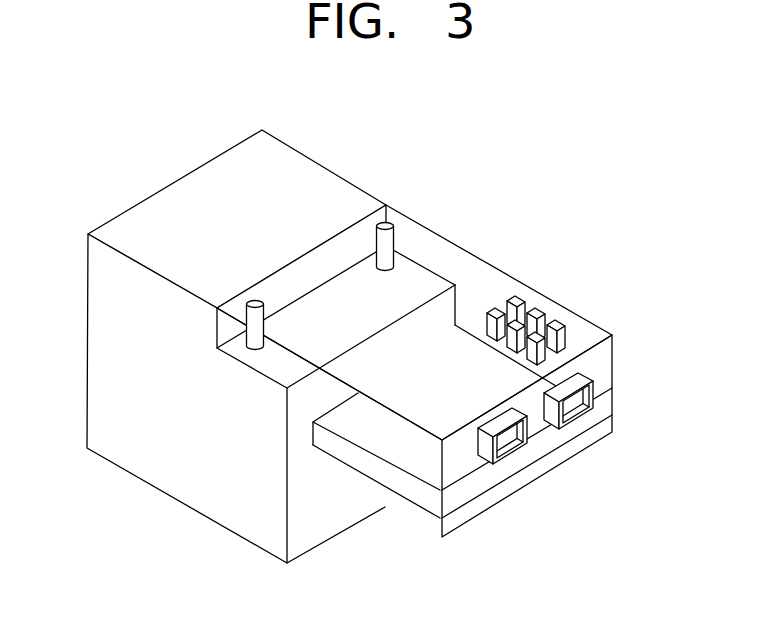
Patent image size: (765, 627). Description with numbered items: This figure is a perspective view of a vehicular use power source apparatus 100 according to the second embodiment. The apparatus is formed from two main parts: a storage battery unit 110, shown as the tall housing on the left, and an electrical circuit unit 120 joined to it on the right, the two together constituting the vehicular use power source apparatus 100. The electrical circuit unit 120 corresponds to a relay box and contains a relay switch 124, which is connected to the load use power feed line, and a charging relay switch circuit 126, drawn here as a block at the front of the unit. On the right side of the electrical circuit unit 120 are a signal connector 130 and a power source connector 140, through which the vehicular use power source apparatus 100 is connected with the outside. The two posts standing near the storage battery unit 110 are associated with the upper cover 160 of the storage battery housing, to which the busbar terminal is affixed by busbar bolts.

The vehicular use power source apparatus 100 is at (577, 193).
The storage battery unit 110 is at (108, 446).
The electrical circuit unit 120 is at (452, 361).
The relay switch 124 is at (430, 411).
The charging relay switch circuit 126 is at (376, 483).
The signal connector 130 is at (488, 458).
The power source connector 140 is at (573, 432).
The upper cover 160 is at (388, 244).